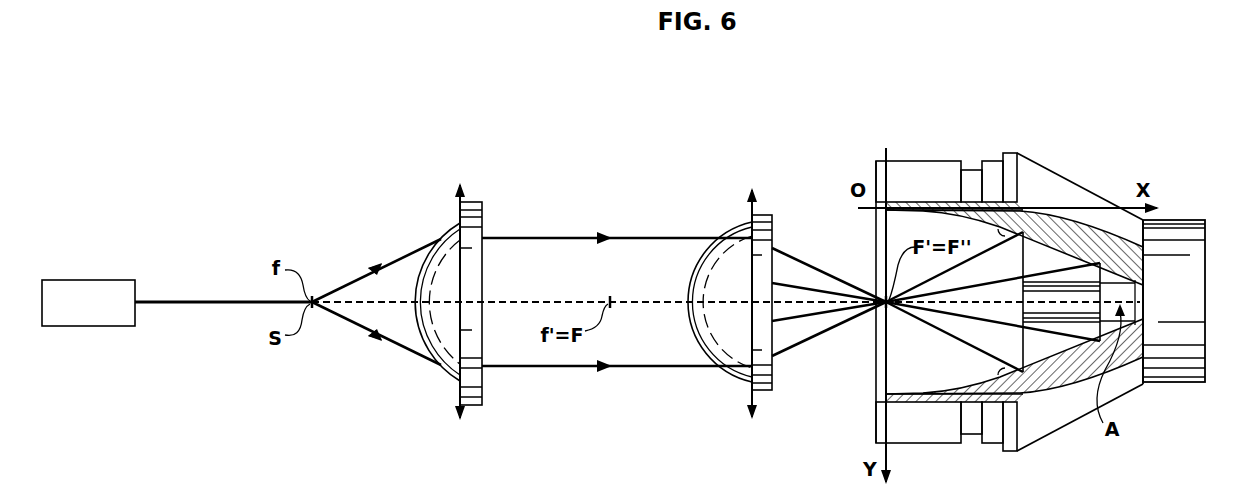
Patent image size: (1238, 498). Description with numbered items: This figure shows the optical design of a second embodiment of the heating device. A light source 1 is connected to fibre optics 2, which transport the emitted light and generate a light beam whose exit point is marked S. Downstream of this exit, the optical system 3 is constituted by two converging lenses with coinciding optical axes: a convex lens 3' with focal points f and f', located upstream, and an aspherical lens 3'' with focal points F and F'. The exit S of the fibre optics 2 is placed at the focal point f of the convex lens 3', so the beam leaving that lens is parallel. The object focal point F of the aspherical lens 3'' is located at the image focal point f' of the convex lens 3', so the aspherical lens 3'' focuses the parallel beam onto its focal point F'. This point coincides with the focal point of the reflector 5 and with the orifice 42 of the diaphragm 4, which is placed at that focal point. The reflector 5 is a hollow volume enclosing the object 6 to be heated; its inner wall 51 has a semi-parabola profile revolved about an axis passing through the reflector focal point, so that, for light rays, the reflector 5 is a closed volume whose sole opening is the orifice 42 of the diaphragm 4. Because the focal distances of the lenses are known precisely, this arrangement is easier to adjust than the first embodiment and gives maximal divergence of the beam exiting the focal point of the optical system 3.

The light source 1 is at (88, 303).
The fibre optics 2 is at (232, 301).
The optical system 3 is at (594, 273).
The convex lens 3' is at (448, 300).
The aspherical lens 3'' is at (730, 300).
The diaphragm 4 is at (880, 250).
The orifice 42 is at (866, 322).
The reflector 5 is at (926, 172).
The inner wall 51 is at (1018, 230).
The object 6 is at (1063, 315).